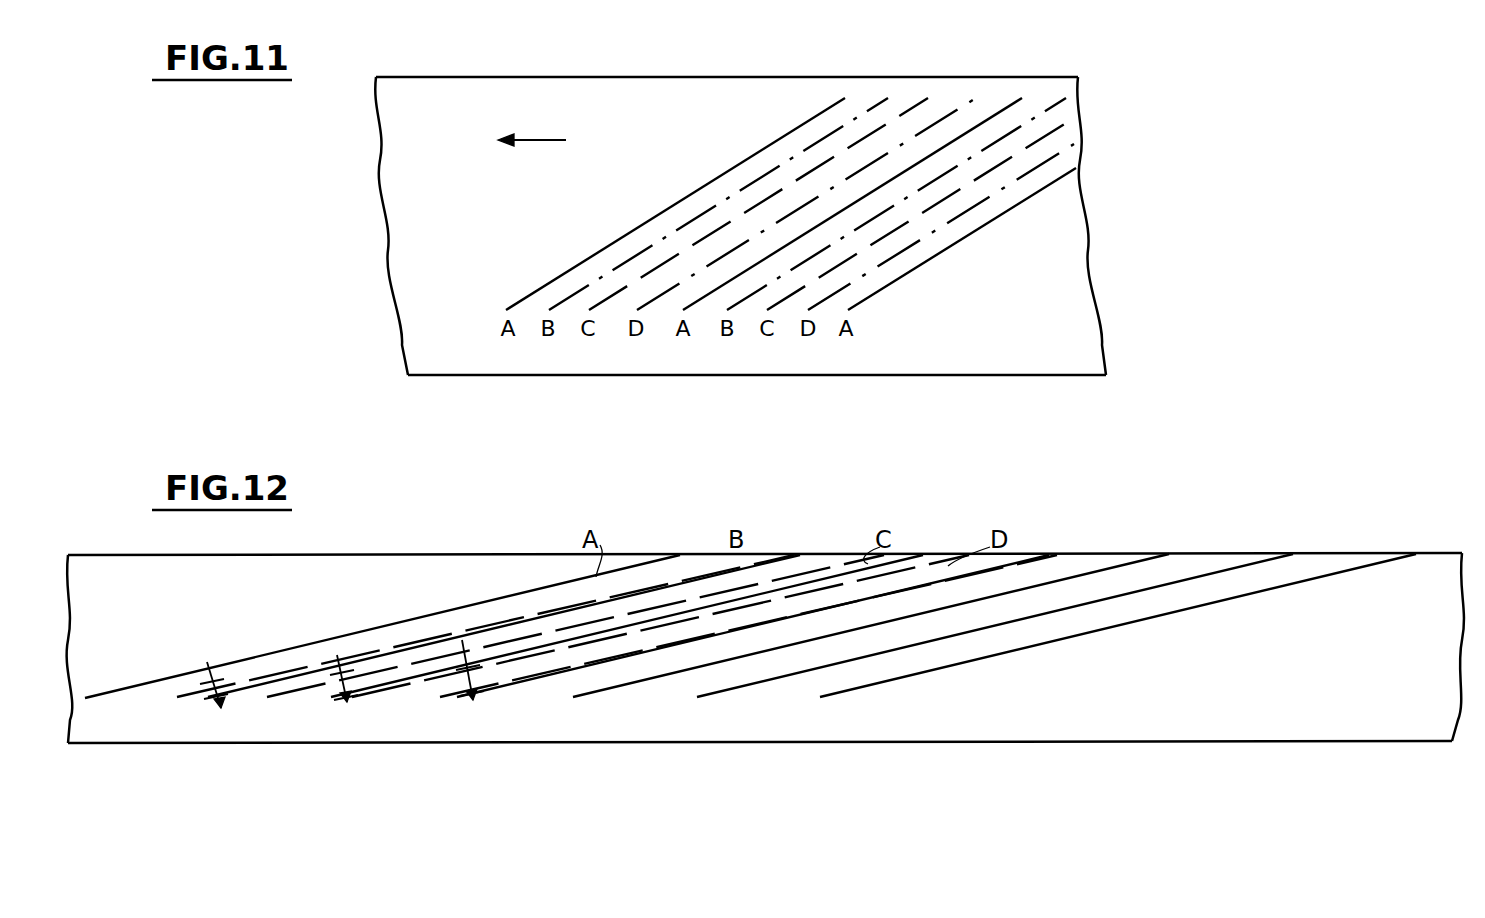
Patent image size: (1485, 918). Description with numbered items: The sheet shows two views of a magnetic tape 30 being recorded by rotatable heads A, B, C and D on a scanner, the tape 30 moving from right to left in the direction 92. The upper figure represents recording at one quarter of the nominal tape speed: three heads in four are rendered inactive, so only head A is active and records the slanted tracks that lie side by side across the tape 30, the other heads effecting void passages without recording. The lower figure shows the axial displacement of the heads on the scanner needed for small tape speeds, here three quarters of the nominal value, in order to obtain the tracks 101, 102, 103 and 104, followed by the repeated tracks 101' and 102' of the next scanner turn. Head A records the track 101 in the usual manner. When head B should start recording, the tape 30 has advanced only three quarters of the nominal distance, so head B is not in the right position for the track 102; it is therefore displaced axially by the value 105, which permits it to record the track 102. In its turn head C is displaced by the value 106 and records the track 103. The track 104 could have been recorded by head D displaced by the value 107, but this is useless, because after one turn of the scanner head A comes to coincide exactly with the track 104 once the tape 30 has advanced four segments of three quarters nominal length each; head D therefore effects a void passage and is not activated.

In FIG. 11, the magnetic tape 30 is at (1083, 318).
In FIG. 12, the magnetic tape 30 is at (1090, 726).
In FIG. 11, the direction of tape movement 92 is at (540, 140).
In FIG. 12, the first track 101 is at (485, 611).
In FIG. 12, the second track 102 is at (575, 611).
In FIG. 12, the third track 103 is at (980, 563).
In FIG. 12, the fourth track 104 is at (1036, 560).
In FIG. 12, the first track of the next cycle 101' is at (904, 611).
In FIG. 12, the second track of the next cycle 102' is at (1024, 611).
In FIG. 12, the axial displacement of head B 105 is at (221, 708).
In FIG. 12, the axial displacement of head C 106 is at (347, 702).
In FIG. 12, the axial displacement of head D 107 is at (473, 700).